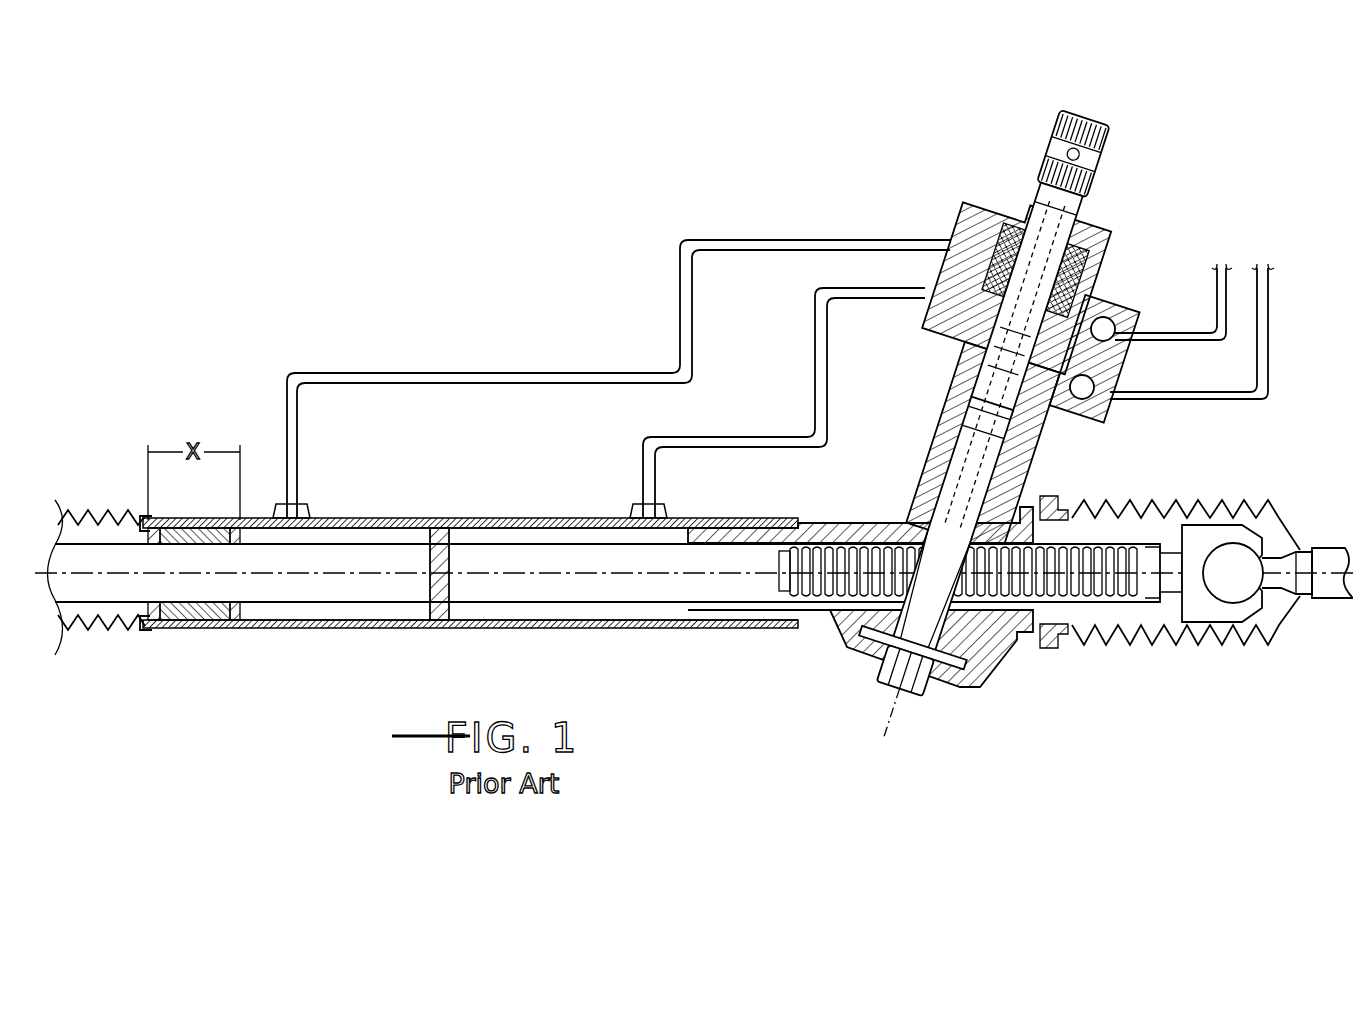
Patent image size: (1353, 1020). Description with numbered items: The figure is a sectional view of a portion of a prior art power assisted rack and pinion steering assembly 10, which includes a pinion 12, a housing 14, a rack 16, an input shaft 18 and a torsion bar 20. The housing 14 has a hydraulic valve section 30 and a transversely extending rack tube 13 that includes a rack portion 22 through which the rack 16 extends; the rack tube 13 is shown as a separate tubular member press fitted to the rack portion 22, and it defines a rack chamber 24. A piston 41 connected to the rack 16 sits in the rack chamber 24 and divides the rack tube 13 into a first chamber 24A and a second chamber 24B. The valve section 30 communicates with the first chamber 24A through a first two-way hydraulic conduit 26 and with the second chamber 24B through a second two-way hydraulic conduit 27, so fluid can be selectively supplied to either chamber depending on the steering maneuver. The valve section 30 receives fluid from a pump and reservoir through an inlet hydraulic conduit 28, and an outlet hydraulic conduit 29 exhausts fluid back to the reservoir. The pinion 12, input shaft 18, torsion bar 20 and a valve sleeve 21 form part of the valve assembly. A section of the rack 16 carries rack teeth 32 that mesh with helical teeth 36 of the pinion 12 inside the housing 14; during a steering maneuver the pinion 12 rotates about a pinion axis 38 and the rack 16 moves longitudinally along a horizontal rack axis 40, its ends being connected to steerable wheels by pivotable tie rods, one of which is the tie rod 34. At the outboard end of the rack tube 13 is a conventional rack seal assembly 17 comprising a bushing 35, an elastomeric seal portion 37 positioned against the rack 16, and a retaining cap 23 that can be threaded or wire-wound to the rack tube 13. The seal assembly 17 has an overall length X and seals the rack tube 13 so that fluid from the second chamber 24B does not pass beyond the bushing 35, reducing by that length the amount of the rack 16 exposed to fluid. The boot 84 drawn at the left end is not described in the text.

The power assisted rack and pinion steering assembly 10 is at (777, 136).
The pinion 12 is at (1025, 468).
The rack tube 13 is at (412, 522).
The housing 14 is at (908, 470).
The rack 16 is at (733, 583).
The rack seal assembly 17 is at (222, 660).
The input shaft 18 is at (1100, 208).
The torsion bar 20 is at (1050, 217).
The valve sleeve 21 is at (1000, 257).
The rack portion 22 is at (836, 648).
The retaining cap 23 is at (143, 531).
The rack chamber 24 is at (555, 640).
The first chamber 24A is at (490, 530).
The second chamber 24B is at (350, 532).
The first two-way hydraulic conduit 26 is at (817, 323).
The second two-way hydraulic conduit 27 is at (745, 244).
The inlet hydraulic conduit 28 is at (1237, 306).
The outlet hydraulic conduit 29 is at (1272, 393).
The hydraulic valve section 30 is at (1108, 289).
The rack teeth 32 is at (1103, 622).
The tie rod 34 is at (1327, 556).
The bushing 35 is at (247, 625).
The helical teeth 36 is at (970, 688).
The seal portion 37 is at (177, 632).
The pinion axis 38 is at (897, 702).
The rack axis 40 is at (1352, 612).
The piston 41 is at (443, 605).
The boot 84 is at (88, 513).